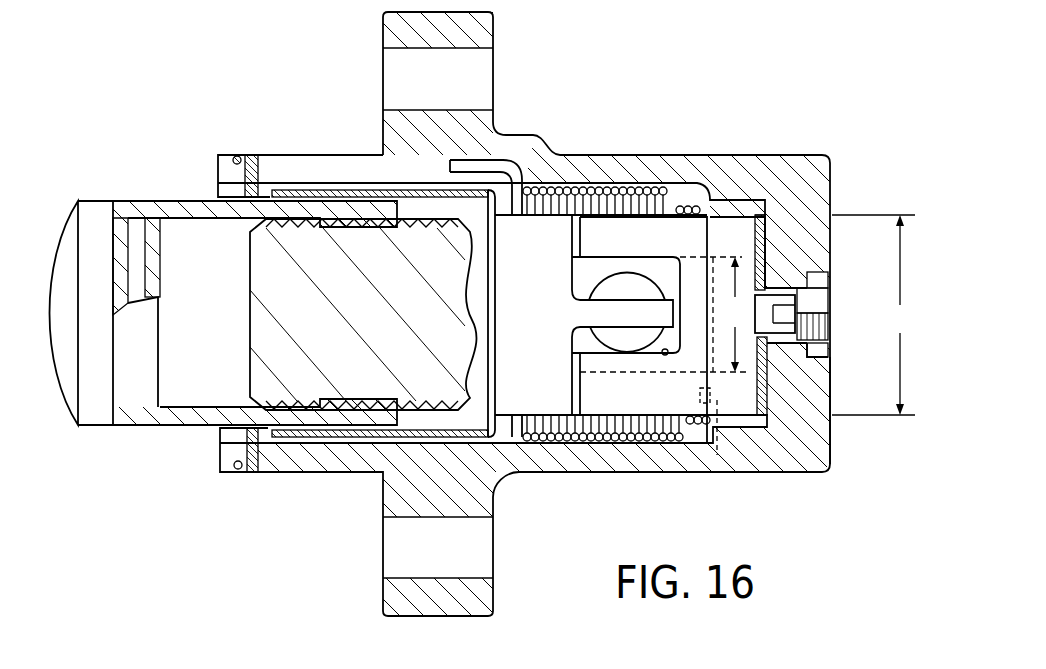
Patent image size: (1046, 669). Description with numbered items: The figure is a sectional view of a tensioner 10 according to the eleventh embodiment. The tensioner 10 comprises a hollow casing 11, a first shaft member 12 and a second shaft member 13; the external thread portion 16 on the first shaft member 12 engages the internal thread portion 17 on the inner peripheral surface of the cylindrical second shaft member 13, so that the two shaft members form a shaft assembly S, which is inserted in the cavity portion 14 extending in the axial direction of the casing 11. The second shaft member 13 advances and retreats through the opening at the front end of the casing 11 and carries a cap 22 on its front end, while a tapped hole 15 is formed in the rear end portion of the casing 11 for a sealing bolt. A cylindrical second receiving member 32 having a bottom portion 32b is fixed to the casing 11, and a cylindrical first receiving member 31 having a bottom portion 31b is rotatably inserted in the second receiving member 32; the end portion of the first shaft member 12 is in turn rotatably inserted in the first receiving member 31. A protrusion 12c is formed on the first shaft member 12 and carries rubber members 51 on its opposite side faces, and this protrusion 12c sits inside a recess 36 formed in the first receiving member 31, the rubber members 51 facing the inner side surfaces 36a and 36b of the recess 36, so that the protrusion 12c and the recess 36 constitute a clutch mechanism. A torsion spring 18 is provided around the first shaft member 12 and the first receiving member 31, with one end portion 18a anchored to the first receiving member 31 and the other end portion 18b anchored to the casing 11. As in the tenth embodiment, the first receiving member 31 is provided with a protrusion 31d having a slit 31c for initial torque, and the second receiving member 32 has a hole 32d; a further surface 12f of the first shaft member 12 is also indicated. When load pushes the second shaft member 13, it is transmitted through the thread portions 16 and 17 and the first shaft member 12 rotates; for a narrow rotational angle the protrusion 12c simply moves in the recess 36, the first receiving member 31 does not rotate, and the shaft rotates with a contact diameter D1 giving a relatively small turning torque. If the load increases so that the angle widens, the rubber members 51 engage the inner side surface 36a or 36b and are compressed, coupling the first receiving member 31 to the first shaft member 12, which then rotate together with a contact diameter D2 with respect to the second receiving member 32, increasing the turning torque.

The tensioner 10 is at (479, 313).
The casing 11 is at (560, 471).
The first shaft member 12 is at (655, 267).
The protrusion 12c is at (618, 312).
The housing step surface 12f is at (713, 283).
The second shaft member 13 is at (185, 200).
The cavity portion 14 is at (327, 186).
The tapped hole 15 is at (818, 286).
The external thread portion 16 is at (288, 445).
The internal thread portion 17 is at (352, 445).
The torsion spring 18 is at (573, 190).
The one end portion of torsion spring 18a is at (720, 456).
The other end portion of torsion spring 18b is at (497, 167).
The cap 22 is at (67, 248).
The first receiving member 31 is at (737, 428).
The bottom portion of first receiving member 31b is at (763, 268).
The slit 31c is at (828, 315).
The protrusion 31d is at (783, 280).
The second receiving member 32 is at (760, 457).
The bottom portion of second receiving member 32b is at (767, 392).
The hole 32d is at (828, 353).
The recess 36 is at (677, 277).
The inner side surface of recess 36a is at (632, 262).
The inner side surface of recess 36b is at (665, 356).
The rubber members 51 is at (633, 340).
The shaft assembly S is at (201, 439).
The contact diameter D1 is at (664, 314).
The contact diameter D2 is at (873, 315).